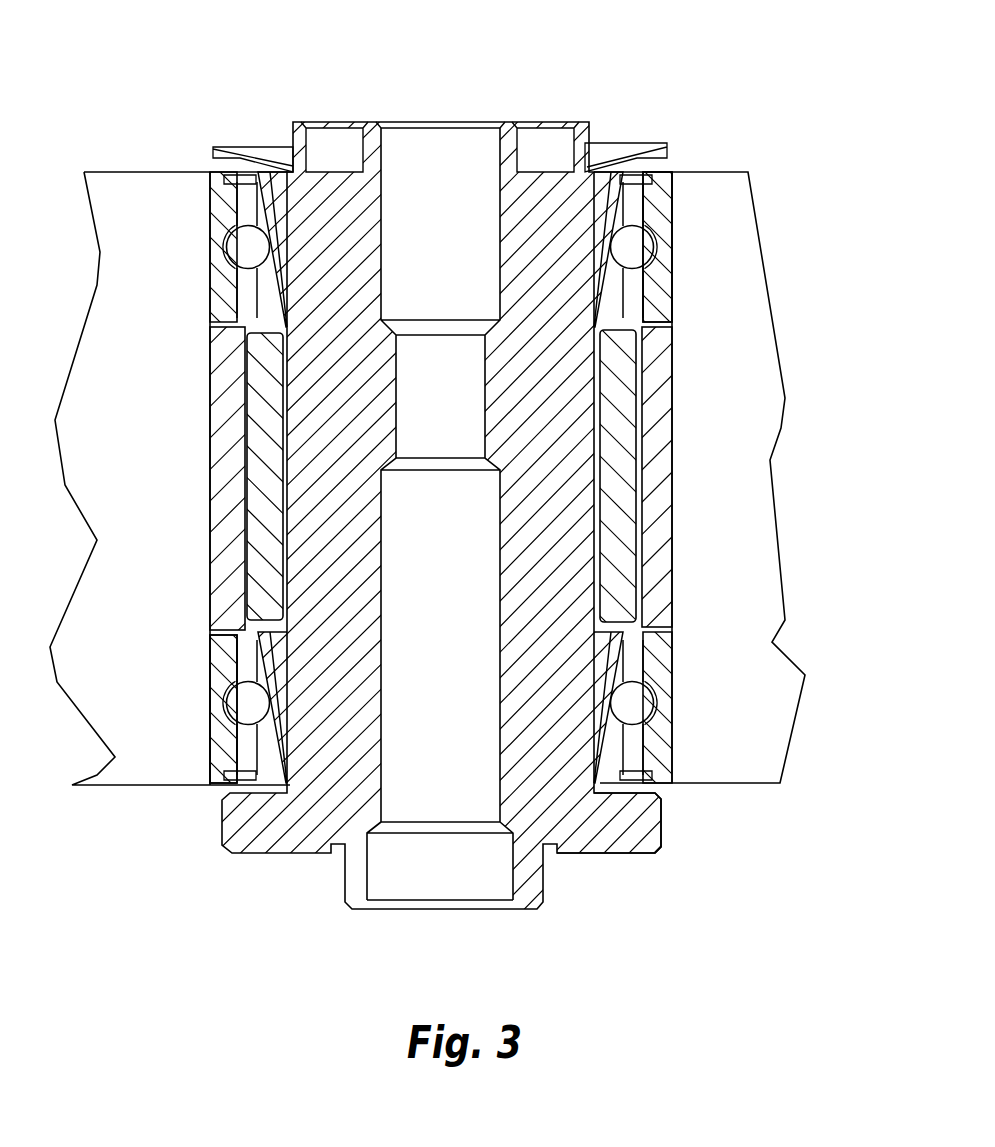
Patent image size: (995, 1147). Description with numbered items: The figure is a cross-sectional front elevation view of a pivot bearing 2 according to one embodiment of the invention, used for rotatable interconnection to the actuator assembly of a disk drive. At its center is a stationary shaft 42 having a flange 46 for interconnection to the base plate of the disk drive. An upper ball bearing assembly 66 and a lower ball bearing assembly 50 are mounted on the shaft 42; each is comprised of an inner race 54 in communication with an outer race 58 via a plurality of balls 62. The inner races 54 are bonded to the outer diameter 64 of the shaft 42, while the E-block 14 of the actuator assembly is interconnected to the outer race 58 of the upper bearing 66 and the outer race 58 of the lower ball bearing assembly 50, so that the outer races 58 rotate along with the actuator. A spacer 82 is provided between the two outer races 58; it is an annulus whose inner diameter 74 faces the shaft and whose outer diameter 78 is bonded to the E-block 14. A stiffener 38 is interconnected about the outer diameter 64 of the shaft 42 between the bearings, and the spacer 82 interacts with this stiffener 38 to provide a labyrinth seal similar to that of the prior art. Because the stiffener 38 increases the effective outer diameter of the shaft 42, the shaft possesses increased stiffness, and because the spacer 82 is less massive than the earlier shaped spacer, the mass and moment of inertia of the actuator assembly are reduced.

The pivot bearing 2 is at (305, 110).
The E-block 14 is at (757, 347).
The stiffener 38 is at (637, 412).
The shaft 42 is at (557, 210).
The flange 46 is at (627, 850).
The lower ball bearing assembly 50 is at (194, 662).
The inner race 54 is at (600, 187).
The outer race 58 is at (660, 207).
The balls 62 is at (634, 246).
The outer diameter of the shaft 64 is at (255, 645).
The upper ball bearing assembly 66 is at (680, 268).
The inner diameter 74 is at (250, 562).
The outer diameter 78 is at (212, 475).
The spacer 82 is at (658, 585).